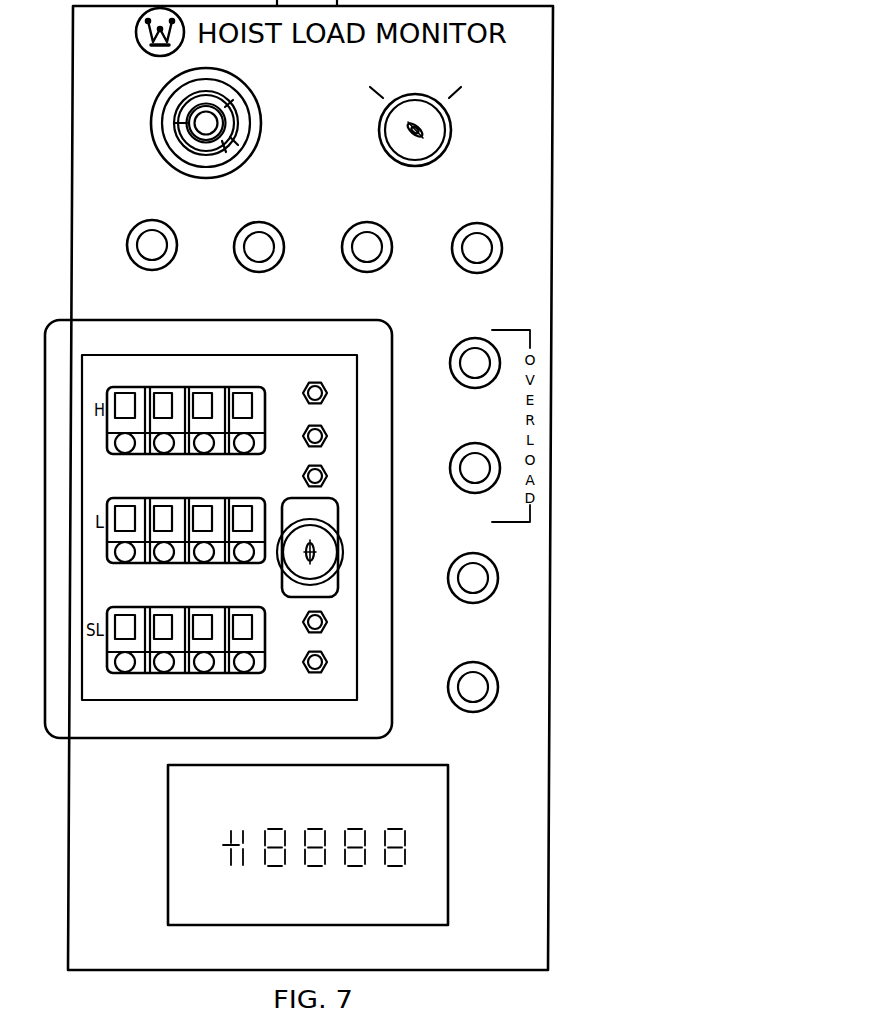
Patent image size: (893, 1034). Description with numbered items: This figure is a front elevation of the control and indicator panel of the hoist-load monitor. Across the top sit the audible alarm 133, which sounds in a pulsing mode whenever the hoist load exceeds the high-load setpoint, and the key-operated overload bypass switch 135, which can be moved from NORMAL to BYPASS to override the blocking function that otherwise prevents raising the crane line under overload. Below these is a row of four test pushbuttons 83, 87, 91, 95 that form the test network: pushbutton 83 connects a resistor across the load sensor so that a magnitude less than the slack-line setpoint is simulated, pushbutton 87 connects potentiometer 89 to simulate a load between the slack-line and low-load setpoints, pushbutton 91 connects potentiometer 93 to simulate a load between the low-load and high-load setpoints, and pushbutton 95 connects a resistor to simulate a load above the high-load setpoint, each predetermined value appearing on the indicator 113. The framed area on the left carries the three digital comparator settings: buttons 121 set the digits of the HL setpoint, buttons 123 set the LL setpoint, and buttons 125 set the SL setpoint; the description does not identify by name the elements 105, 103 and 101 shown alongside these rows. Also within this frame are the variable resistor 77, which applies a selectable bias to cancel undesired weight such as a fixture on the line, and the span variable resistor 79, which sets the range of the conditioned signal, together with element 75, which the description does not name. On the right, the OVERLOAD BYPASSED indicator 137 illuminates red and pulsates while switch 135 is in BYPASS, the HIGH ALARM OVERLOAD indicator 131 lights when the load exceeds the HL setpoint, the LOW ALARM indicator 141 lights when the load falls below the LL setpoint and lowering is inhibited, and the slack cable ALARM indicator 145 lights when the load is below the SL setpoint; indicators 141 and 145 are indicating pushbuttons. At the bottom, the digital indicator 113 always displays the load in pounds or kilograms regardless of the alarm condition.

The audible alarm 133 is at (152, 120).
The overload bypass switch 135 is at (452, 128).
The pushbutton 83 is at (149, 240).
The pushbutton 87 is at (263, 243).
The pushbutton 91 is at (374, 244).
The pushbutton 95 is at (484, 248).
The OVERLOAD BYPASSED indicator 137 is at (473, 358).
The HIGH ALARM OVERLOAD indicator 131 is at (468, 463).
The LOW ALARM indicator 141 is at (480, 574).
The slack cable ALARM indicator 145 is at (482, 684).
The variable resistor 77 is at (328, 391).
The span variable resistor 79 is at (328, 437).
The RZ zero pushbutton switch 75 is at (328, 476).
The potentiometer 93 is at (328, 620).
The potentiometer 89 is at (328, 663).
The buttons 121 is at (128, 415).
The high limit thumbwheel setting line 105 is at (105, 433).
The buttons 123 is at (135, 525).
The low limit thumbwheel setting line 103 is at (105, 541).
The slack limit thumbwheel setting line 101 is at (105, 645).
The buttons 125 is at (128, 643).
The indicator 113 is at (167, 839).